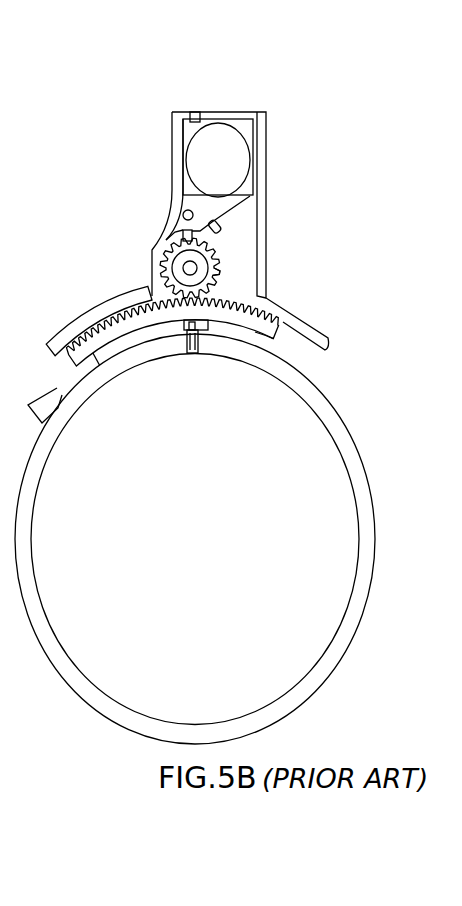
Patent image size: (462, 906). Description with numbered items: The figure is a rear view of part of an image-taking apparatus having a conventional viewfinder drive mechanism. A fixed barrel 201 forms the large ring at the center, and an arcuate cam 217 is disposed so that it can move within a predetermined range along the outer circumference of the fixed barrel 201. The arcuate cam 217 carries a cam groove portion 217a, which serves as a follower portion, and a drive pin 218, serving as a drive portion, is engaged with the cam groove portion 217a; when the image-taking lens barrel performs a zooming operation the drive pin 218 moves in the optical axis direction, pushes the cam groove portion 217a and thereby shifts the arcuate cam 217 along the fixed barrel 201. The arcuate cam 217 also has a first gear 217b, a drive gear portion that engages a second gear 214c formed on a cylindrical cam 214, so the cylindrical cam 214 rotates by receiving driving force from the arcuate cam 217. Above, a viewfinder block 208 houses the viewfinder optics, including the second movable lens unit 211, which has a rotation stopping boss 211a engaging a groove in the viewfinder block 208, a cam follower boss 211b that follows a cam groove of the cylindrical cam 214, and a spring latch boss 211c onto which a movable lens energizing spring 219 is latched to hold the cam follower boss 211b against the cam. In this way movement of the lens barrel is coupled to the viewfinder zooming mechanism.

The fixed barrel 201 is at (330, 400).
The viewfinder block 208 is at (266, 134).
The second movable lens unit 211 is at (248, 160).
The rotation stopping boss 211a is at (202, 111).
The cam follower boss 211b is at (180, 234).
The spring latch boss 211c is at (222, 212).
The cylindrical cam 214 is at (166, 262).
The second gear 214c is at (219, 263).
The arcuate cam 217 is at (283, 358).
The cam groove portion 217a is at (100, 345).
The first gear 217b is at (255, 294).
The drive pin 218 is at (192, 355).
The movable lens energizing spring 219 is at (228, 228).